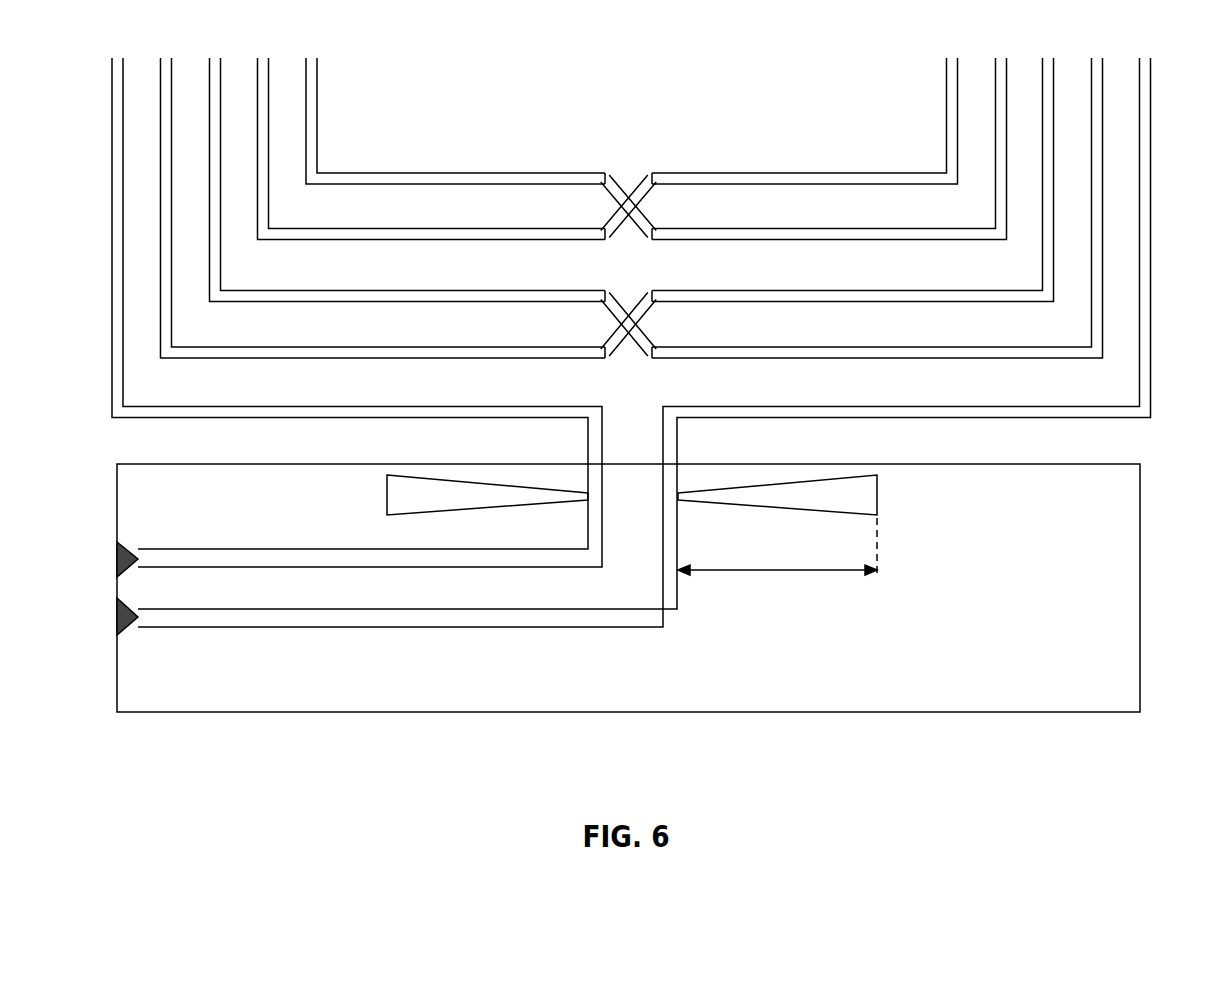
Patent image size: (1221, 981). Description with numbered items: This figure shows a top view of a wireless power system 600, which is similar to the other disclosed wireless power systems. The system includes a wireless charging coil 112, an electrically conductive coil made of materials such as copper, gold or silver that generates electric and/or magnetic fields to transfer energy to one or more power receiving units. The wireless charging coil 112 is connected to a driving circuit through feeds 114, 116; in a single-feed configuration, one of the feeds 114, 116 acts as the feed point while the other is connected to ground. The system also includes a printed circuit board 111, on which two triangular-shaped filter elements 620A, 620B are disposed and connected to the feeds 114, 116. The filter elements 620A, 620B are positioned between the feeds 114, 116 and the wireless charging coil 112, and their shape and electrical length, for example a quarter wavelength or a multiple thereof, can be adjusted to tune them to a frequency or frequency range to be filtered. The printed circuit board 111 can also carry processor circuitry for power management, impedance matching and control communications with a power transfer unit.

The wireless power system 600 is at (686, 72).
The printed circuit board 111 is at (1093, 712).
The wireless charging coil 112 is at (629, 346).
The feed 114 is at (335, 317).
The feed 116 is at (1145, 443).
The filter element 620A is at (385, 490).
The filter element 620B is at (880, 490).